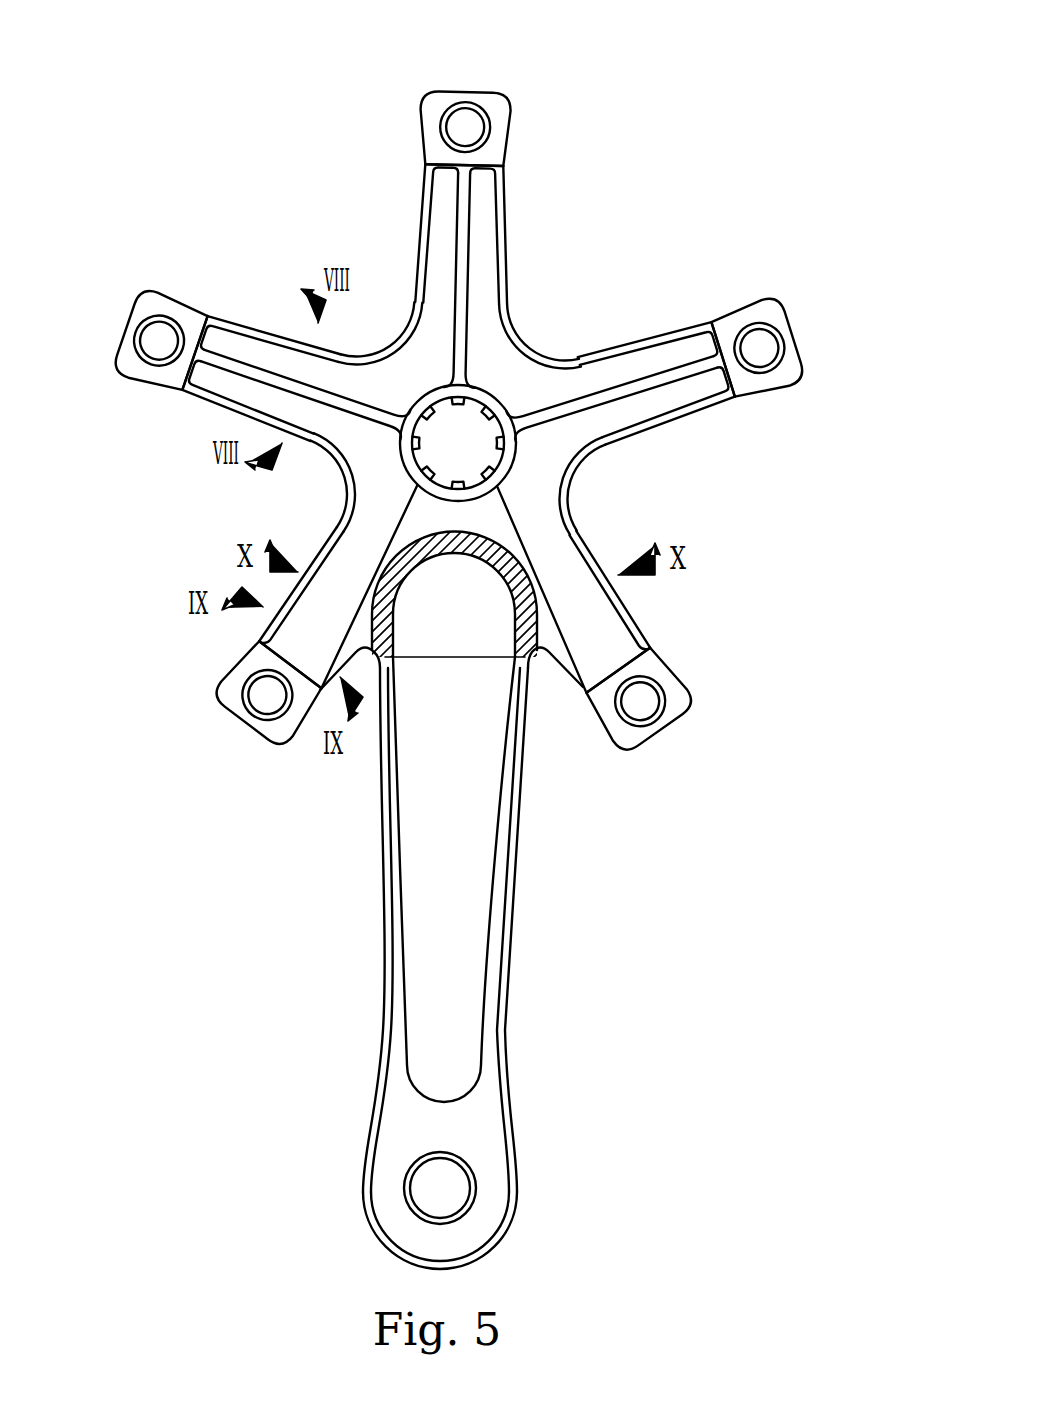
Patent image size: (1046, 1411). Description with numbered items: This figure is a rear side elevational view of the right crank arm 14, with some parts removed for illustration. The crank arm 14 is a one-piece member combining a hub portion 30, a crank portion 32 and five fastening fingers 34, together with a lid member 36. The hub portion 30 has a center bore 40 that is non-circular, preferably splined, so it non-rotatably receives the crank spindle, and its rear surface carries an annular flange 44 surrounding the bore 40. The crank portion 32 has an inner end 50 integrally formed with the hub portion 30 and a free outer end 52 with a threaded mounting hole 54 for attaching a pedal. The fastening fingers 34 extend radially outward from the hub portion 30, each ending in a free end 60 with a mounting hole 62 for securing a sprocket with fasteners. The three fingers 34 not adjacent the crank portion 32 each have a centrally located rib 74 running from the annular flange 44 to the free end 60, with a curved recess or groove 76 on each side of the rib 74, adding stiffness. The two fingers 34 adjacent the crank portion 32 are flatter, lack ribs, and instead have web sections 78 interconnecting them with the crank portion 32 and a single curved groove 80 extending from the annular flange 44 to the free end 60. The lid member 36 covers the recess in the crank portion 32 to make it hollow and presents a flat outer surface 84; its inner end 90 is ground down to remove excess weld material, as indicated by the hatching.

The right crank arm 14 is at (671, 85).
The hub portion 30 is at (530, 323).
The crank portion 32 is at (522, 930).
The fastening fingers 34 is at (521, 189).
The lid member 36 is at (445, 960).
The center bore 40 is at (492, 412).
The annular flange 44 is at (503, 468).
The inner end 50 is at (518, 765).
The free outer end 52 is at (513, 1115).
The mounting hole 54 is at (455, 1185).
The free end 60 is at (500, 92).
The mounting hole 62 is at (465, 123).
The rib 74 is at (452, 272).
The curved recesses or grooves 76 is at (490, 240).
The web sections 78 is at (388, 555).
The curved recess or groove 80 is at (340, 523).
The flat outer surface 84 is at (476, 832).
The inner end 90 is at (508, 662).